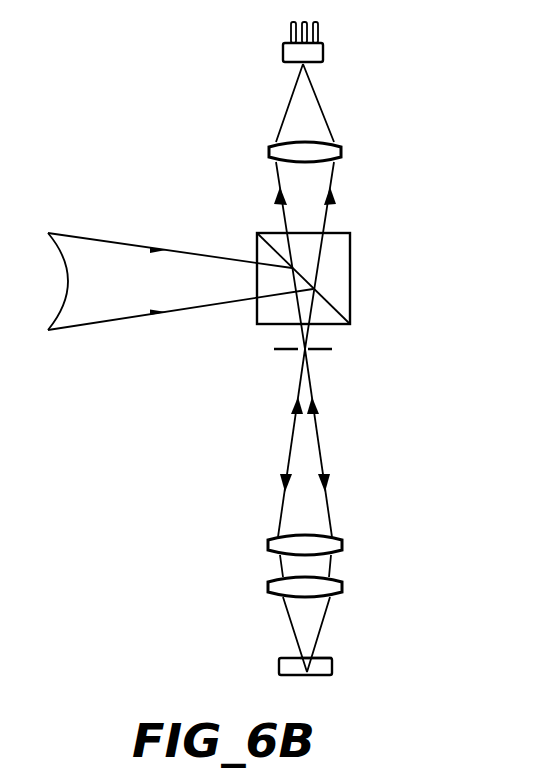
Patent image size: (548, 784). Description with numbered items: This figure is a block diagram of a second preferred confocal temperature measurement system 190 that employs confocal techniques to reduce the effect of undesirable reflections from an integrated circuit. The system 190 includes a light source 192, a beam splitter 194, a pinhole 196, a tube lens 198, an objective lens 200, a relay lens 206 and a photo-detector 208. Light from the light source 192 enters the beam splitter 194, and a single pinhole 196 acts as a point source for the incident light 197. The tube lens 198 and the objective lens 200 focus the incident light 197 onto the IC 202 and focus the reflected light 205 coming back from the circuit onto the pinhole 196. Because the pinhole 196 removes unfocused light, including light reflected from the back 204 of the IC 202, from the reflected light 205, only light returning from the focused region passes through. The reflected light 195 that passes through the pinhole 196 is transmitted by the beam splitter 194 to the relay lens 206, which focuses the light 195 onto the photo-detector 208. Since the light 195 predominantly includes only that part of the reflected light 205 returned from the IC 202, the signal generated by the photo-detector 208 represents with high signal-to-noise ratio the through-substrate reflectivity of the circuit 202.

The confocal temperature measurement system 190 is at (130, 575).
The light source 192 is at (117, 315).
The beam splitter 194 is at (352, 302).
The reflected light 195 is at (334, 189).
The pinhole 196 is at (292, 352).
The incident light 197 is at (283, 482).
The tube lens 198 is at (268, 540).
The objective lens 200 is at (342, 585).
The IC 202 is at (279, 663).
The back of the IC 204 is at (320, 658).
The reflected light 205 is at (318, 407).
The relay lens 206 is at (270, 152).
The photo-detector 208 is at (293, 52).